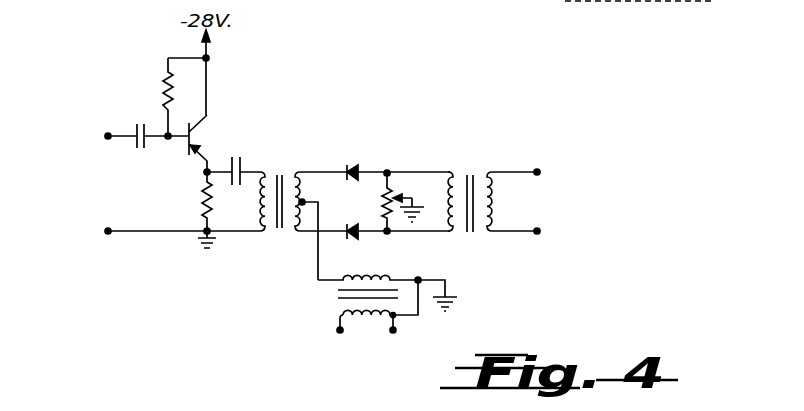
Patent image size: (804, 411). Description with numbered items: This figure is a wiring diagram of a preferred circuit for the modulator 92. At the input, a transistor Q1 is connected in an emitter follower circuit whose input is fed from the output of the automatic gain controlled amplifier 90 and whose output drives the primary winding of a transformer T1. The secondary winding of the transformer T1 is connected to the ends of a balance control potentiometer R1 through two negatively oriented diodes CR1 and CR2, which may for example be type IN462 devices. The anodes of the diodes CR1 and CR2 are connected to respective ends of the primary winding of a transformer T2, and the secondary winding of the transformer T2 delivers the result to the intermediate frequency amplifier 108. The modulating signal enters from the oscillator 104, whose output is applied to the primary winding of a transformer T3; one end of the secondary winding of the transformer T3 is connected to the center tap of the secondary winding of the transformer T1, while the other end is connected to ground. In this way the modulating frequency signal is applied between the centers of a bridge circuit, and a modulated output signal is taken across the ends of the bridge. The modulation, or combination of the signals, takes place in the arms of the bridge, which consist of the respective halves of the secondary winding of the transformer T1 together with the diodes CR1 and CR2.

The automatic gain controlled amplifier 90 is at (105, 183).
The modulator 92 is at (386, 180).
The oscillator 104 is at (367, 359).
The intermediate frequency amplifier 108 is at (607, 205).
The transistor Q1 is at (207, 143).
The transformer T1 is at (253, 186).
The transformer T2 is at (470, 189).
The transformer T3 is at (375, 295).
The balance control potentiometer R1 is at (389, 202).
The diode CR1 is at (351, 167).
The diode CR2 is at (357, 236).